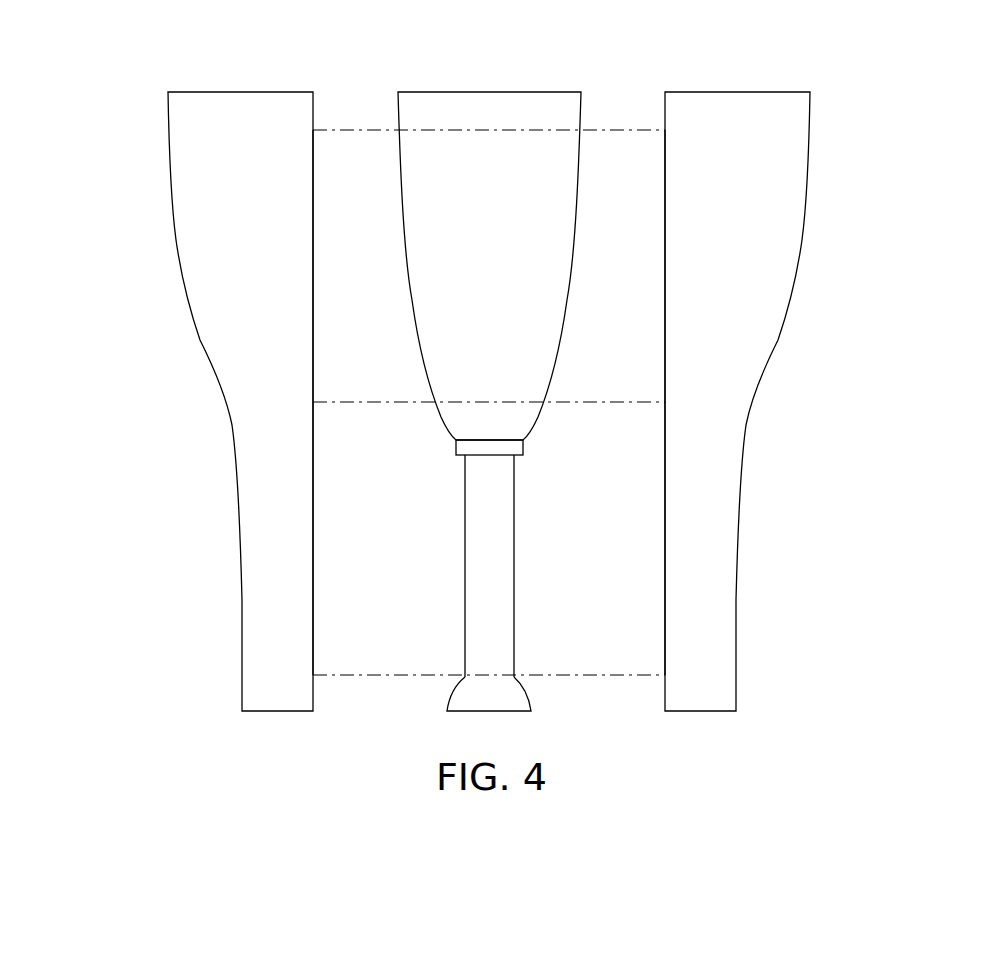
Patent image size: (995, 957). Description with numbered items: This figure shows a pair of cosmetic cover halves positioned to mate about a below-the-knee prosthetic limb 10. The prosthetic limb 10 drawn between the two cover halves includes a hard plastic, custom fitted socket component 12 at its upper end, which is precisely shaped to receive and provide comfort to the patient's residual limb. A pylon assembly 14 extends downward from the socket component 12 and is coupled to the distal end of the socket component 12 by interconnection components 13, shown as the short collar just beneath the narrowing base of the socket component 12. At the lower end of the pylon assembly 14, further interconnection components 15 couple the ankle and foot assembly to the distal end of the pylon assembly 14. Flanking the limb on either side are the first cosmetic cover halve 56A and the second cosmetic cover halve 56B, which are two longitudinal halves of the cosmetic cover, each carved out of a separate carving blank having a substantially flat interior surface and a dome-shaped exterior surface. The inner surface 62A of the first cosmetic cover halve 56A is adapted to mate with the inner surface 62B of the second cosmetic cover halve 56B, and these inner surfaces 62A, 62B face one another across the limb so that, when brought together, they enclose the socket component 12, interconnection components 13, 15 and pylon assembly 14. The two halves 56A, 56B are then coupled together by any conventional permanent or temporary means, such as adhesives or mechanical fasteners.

The prosthetic limb 10 is at (513, 361).
The socket component 12 is at (571, 208).
The interconnection components 13 is at (455, 449).
The pylon assembly 14 is at (465, 526).
The interconnection components 15 is at (447, 697).
The first cosmetic cover halve 56A is at (152, 151).
The second cosmetic cover halve 56B is at (828, 151).
The inner surface of first cosmetic cover halve 62A is at (313, 333).
The inner surface of second cosmetic cover halve 62B is at (665, 333).